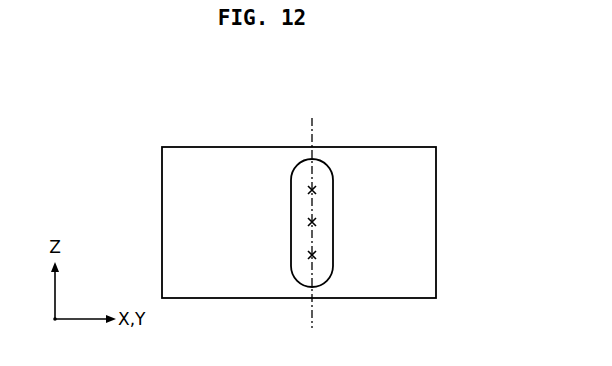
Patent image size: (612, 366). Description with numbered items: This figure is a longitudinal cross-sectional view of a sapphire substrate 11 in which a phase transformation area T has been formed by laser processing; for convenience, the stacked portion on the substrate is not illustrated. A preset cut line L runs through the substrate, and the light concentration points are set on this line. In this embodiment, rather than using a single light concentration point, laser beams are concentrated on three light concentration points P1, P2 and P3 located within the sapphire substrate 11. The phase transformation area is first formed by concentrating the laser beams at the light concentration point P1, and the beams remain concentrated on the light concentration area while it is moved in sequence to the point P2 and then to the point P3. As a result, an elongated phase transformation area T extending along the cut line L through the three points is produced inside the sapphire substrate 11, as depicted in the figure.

The sapphire substrate 11 is at (434, 267).
The preset cut line L is at (312, 210).
The phase transformation area T is at (291, 268).
The light concentration point P1 is at (316, 189).
The light concentration point P2 is at (316, 221).
The light concentration point P3 is at (316, 254).